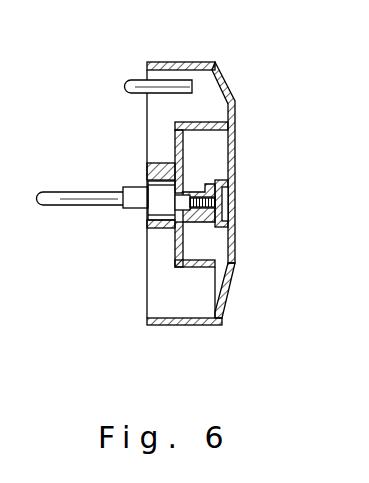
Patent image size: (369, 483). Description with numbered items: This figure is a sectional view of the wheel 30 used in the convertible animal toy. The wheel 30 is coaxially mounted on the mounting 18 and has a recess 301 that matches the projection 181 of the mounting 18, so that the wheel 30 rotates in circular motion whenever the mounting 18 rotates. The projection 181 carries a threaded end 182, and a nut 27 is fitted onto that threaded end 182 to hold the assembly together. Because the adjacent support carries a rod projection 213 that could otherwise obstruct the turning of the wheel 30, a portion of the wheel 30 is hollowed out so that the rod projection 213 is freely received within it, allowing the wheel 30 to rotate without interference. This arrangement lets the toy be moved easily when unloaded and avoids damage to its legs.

The wheel 30 is at (196, 62).
The rod projection 213 is at (135, 84).
The mounting 18 is at (140, 206).
The projection 181 is at (170, 214).
The recess 301 is at (186, 190).
The nut 27 is at (217, 185).
The threaded end 182 is at (190, 212).